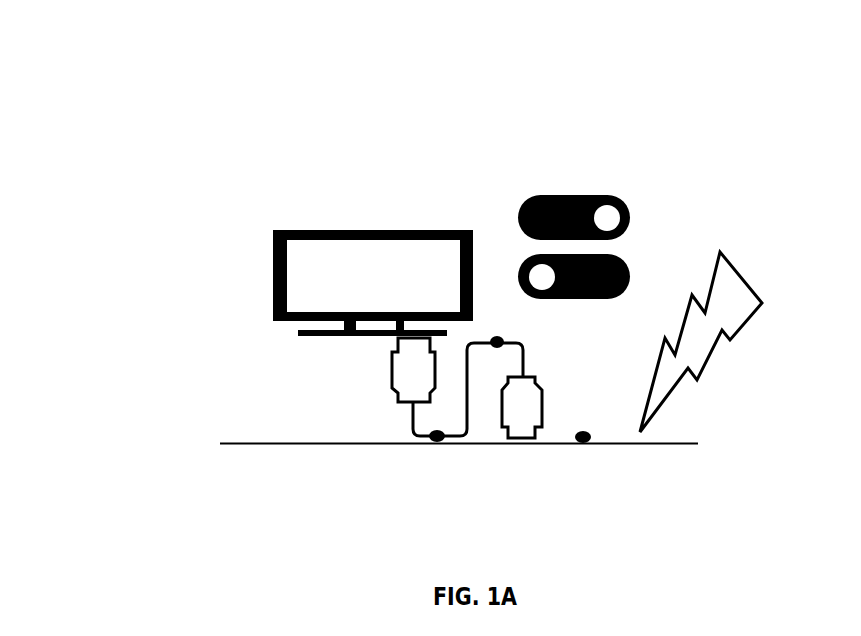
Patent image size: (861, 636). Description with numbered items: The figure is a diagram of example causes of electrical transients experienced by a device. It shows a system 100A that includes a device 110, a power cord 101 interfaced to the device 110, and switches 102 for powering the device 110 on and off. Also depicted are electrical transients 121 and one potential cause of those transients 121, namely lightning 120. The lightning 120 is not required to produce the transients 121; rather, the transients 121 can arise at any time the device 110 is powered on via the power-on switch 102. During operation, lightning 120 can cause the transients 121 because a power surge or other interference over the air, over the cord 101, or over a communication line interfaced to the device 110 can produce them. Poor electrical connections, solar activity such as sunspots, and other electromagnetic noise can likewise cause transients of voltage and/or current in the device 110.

The system 100A is at (122, 107).
The device 110 is at (385, 230).
The switches 102 is at (572, 195).
The power cord 101 is at (390, 368).
The electrical transients 121 is at (496, 352).
The lightning 120 is at (762, 303).